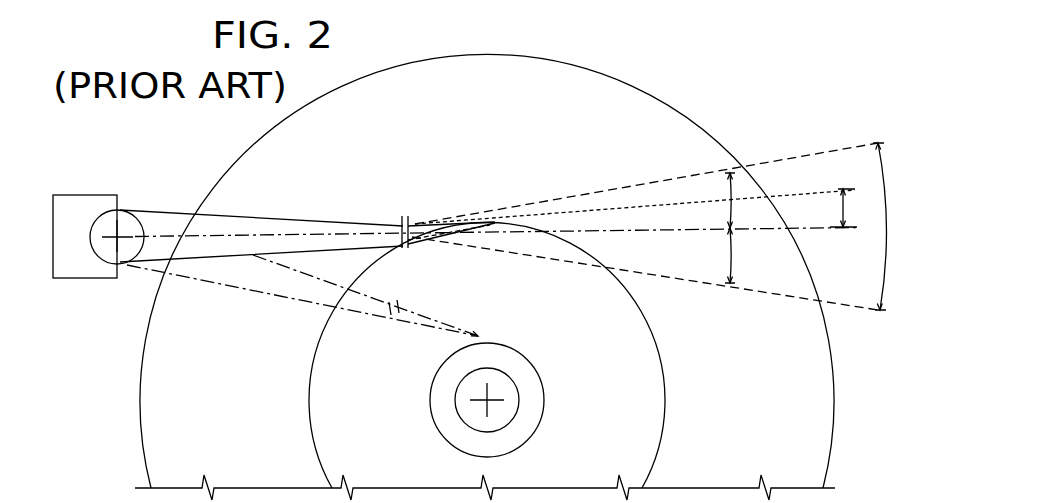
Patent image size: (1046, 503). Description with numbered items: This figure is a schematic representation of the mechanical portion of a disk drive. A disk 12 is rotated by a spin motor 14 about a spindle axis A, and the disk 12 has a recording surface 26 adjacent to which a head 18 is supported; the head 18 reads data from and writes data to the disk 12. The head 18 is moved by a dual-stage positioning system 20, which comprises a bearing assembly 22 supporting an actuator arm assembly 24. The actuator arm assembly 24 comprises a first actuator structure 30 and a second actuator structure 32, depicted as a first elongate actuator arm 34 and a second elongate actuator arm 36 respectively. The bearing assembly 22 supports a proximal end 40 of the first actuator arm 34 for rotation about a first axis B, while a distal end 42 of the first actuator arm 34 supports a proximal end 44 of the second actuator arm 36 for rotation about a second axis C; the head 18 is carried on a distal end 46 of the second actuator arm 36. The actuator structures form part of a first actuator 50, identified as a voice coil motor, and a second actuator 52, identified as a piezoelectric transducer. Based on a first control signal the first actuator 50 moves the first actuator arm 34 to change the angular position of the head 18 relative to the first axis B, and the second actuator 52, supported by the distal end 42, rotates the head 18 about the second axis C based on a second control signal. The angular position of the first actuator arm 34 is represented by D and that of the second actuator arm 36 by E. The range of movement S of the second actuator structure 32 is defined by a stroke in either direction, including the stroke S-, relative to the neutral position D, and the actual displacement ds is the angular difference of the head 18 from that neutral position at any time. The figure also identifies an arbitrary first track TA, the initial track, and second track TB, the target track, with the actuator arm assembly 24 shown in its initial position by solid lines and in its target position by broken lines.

The disk 12 is at (527, 76).
The spin motor 14 is at (467, 390).
The head 18 is at (493, 222).
The positioning system 20 is at (350, 163).
The bearing assembly 22 is at (125, 220).
The actuator arm assembly 24 is at (295, 202).
The recording surface 26 is at (501, 134).
The first actuator structure 30 is at (265, 173).
The second actuator structure 32 is at (468, 285).
The first actuator arm 34 is at (222, 222).
The second actuator arm 36 is at (448, 233).
The proximal end of first actuator arm 40 is at (153, 203).
The distal end of first actuator arm 42 is at (392, 218).
The proximal end of second actuator arm 44 is at (415, 218).
The distal end of second actuator arm 46 is at (480, 214).
The first actuator 50 is at (77, 200).
The second actuator 52 is at (402, 215).
The spindle axis A is at (485, 400).
The first axis B is at (110, 245).
The second axis C is at (408, 242).
The angular position of first actuator arm D is at (822, 228).
The angular position of second actuator arm E is at (810, 190).
The range of movement S is at (883, 226).
The negative stroke S- is at (731, 255).
The actual displacement ds is at (843, 207).
The first track TA is at (310, 400).
The second track TB is at (431, 417).